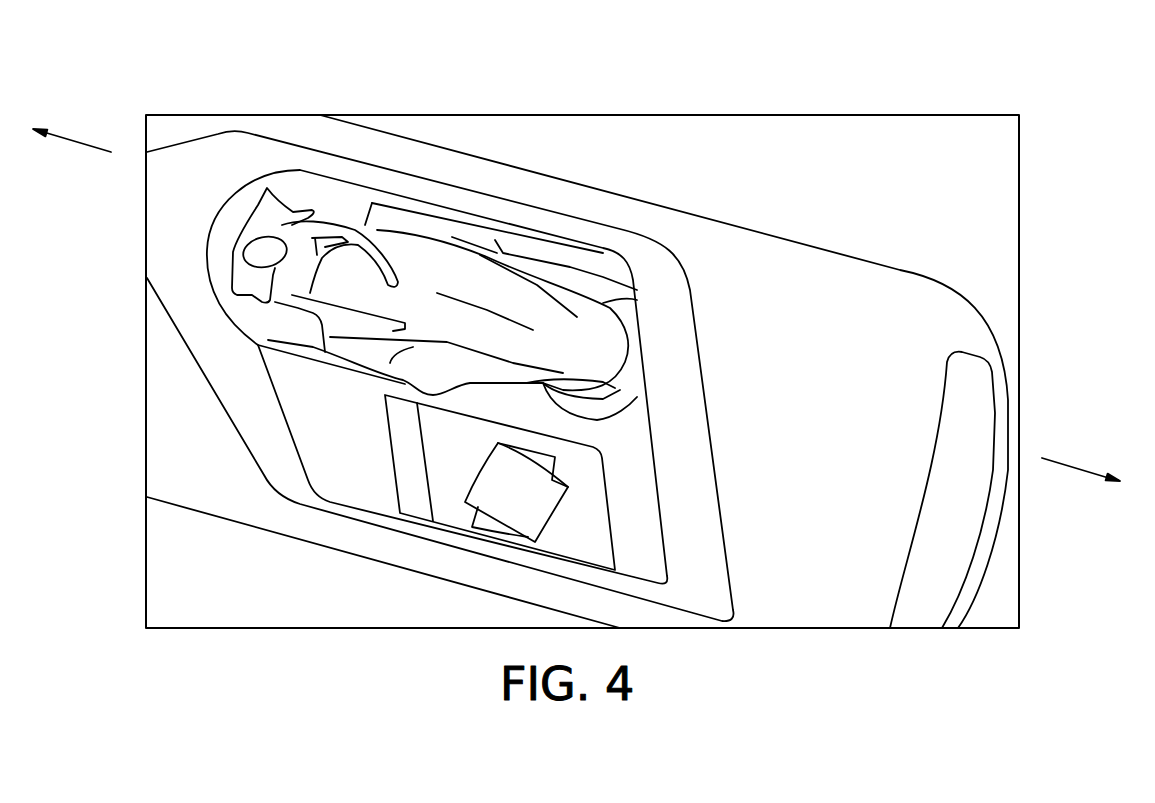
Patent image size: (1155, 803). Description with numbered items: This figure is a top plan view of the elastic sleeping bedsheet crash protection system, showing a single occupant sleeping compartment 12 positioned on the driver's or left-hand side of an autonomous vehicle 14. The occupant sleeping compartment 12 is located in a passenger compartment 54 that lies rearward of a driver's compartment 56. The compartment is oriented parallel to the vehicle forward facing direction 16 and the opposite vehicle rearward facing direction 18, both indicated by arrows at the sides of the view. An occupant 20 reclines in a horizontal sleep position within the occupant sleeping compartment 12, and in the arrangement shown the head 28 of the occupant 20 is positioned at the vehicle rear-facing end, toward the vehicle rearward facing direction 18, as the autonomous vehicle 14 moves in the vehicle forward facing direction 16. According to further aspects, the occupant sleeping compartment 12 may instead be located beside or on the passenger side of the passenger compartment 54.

The occupant sleeping compartment 12 is at (593, 258).
The autonomous vehicle 14 is at (963, 332).
The vehicle forward facing direction 16 is at (1072, 462).
The vehicle rearward facing direction 18 is at (88, 148).
The occupant 20 is at (325, 238).
The head 28 is at (262, 236).
The passenger compartment 54 is at (650, 428).
The driver's compartment 56 is at (830, 357).